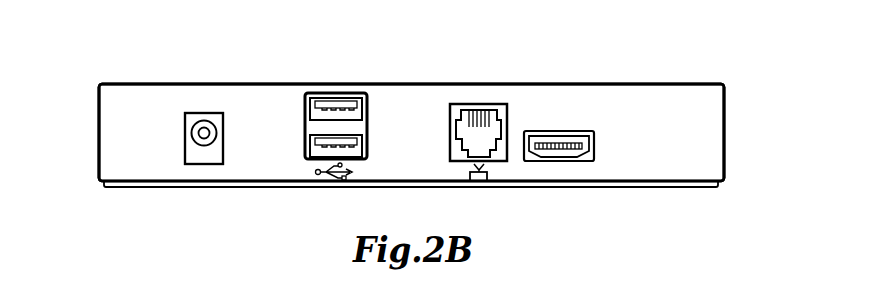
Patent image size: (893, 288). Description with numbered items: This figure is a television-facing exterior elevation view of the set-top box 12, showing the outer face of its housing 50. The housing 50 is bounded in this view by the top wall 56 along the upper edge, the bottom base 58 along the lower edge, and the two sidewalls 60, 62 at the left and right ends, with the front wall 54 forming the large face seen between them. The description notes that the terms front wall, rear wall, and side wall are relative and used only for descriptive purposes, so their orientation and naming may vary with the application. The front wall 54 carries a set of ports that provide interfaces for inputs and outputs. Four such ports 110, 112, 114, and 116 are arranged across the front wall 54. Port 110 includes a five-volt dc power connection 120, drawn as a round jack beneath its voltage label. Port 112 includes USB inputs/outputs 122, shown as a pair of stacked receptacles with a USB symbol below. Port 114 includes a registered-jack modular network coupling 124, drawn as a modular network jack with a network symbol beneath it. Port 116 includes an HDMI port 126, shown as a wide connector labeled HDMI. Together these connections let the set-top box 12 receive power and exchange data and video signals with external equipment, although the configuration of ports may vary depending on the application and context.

The set-top box 12 is at (125, 72).
The housing 50 is at (695, 79).
The front wall 54 is at (133, 172).
The top wall 56 is at (169, 84).
The bottom base 58 is at (259, 190).
The sidewall 60 is at (99, 134).
The sidewall 62 is at (724, 133).
The port 110 is at (216, 116).
The port 112 is at (334, 93).
The port 114 is at (482, 108).
The port 116 is at (557, 130).
The 5V dc power connection 120 is at (202, 160).
The USB inputs/outputs 122 is at (316, 157).
The RJ-45 coupling 124 is at (498, 153).
The HDMI port 126 is at (591, 162).